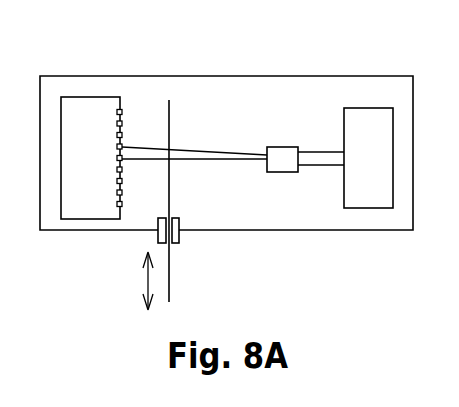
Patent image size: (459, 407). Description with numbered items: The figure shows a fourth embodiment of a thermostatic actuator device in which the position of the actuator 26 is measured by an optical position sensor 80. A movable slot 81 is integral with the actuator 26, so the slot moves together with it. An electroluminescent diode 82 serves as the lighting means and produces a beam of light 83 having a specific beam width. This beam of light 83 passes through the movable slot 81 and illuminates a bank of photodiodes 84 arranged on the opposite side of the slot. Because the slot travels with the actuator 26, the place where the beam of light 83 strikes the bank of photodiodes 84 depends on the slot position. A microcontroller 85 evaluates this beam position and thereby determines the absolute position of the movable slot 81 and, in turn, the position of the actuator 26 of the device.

The optical position sensor 80 is at (228, 60).
The movable slot 81 is at (170, 148).
The electroluminescent diode 82 is at (283, 163).
The beam of light 83 is at (143, 151).
The bank of photodiodes 84 is at (83, 212).
The microcontroller 85 is at (367, 193).
The actuator 26 is at (169, 263).